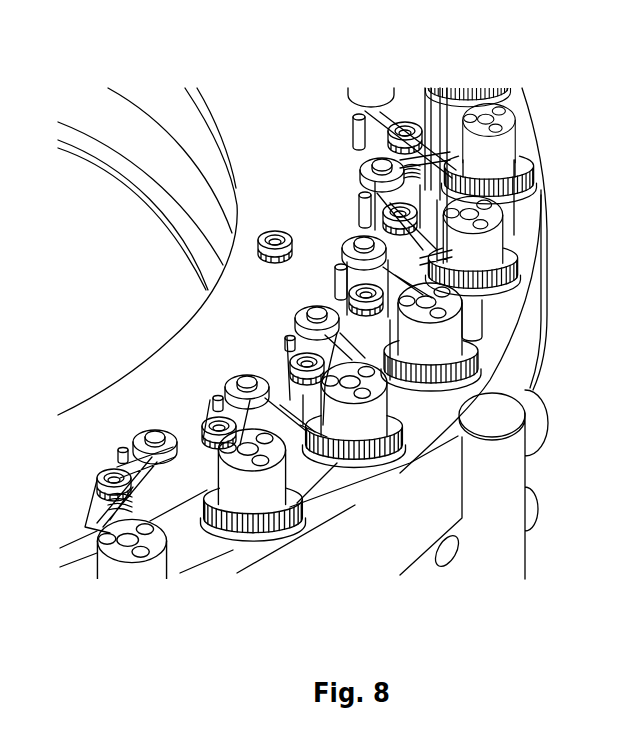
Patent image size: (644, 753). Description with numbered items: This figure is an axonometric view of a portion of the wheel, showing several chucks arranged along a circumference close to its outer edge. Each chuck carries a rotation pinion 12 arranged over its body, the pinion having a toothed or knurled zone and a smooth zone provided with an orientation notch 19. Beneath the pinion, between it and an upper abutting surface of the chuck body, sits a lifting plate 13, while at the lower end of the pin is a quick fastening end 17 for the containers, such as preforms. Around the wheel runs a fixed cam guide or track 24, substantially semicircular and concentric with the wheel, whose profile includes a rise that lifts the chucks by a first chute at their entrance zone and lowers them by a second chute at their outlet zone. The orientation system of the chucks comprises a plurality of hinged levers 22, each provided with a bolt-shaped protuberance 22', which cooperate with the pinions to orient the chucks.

The rotation pinion 12 is at (500, 147).
The lifting plate 13 is at (523, 193).
The quick fastening end 17 is at (520, 484).
The orientation notch 19 is at (462, 133).
The lever 22 is at (347, 182).
The protuberance 22' is at (344, 274).
The fixed cam guide or track 24 is at (535, 255).